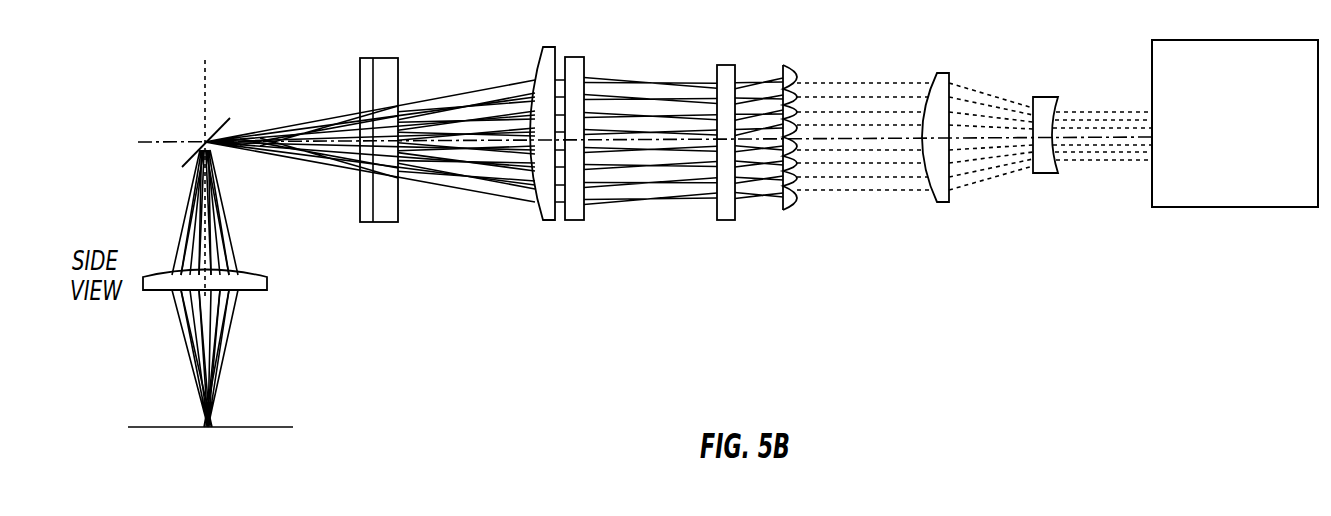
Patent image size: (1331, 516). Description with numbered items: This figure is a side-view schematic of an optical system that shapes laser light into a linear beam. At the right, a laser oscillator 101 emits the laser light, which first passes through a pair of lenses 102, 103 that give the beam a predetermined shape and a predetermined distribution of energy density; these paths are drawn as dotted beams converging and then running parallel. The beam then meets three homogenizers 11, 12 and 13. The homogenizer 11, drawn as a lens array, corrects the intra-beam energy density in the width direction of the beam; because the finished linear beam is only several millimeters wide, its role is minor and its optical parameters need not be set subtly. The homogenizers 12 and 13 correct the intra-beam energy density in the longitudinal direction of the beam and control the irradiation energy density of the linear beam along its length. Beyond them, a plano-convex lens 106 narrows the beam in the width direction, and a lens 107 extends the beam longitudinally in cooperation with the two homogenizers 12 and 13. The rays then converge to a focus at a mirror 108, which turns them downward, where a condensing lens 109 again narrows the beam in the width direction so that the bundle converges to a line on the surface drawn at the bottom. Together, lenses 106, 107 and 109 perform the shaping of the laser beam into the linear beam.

The oscillator 101 is at (1311, 196).
The lens 102 is at (1037, 97).
The lens 103 is at (940, 73).
The homogenizer 11 is at (790, 65).
The homogenizer 12 is at (721, 75).
The homogenizer 13 is at (577, 70).
The lens 106 is at (543, 53).
The lens 107 is at (380, 58).
The mirror 108 is at (207, 140).
The lens 109 is at (270, 282).